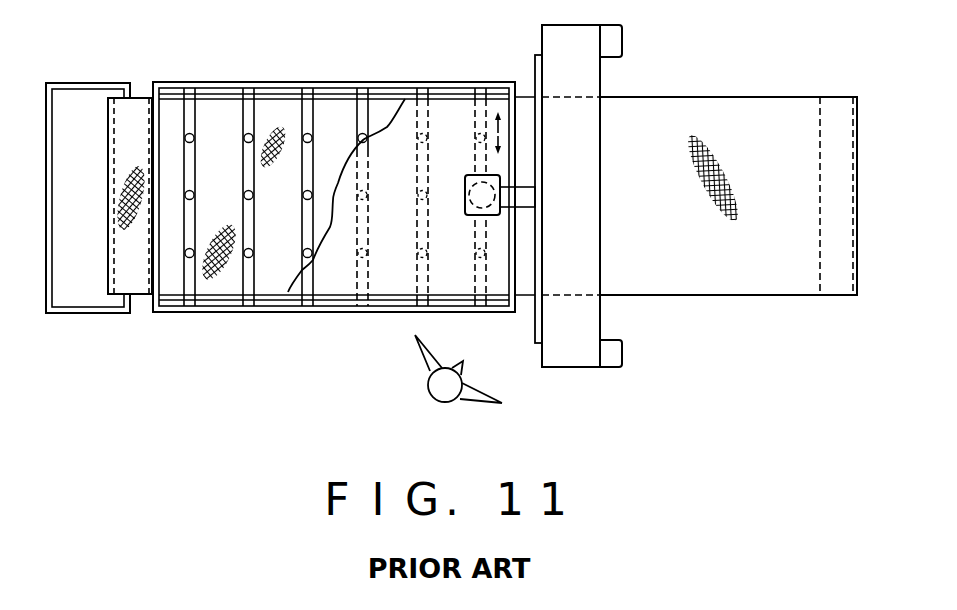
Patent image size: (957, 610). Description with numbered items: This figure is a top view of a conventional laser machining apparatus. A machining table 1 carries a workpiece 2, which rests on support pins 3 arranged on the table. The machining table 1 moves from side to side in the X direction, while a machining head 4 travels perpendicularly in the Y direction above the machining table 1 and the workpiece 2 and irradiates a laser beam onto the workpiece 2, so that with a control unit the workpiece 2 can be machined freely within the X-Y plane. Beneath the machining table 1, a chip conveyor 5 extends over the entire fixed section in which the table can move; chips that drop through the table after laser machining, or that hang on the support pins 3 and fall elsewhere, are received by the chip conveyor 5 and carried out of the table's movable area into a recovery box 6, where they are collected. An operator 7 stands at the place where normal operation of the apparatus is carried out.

The machining table 1 is at (225, 82).
The workpiece 2 is at (348, 275).
The support pin 3 is at (312, 128).
The machining head 4 is at (480, 190).
The chip conveyor 5 is at (751, 118).
The recovery box 6 is at (85, 83).
The operator 7 is at (440, 390).